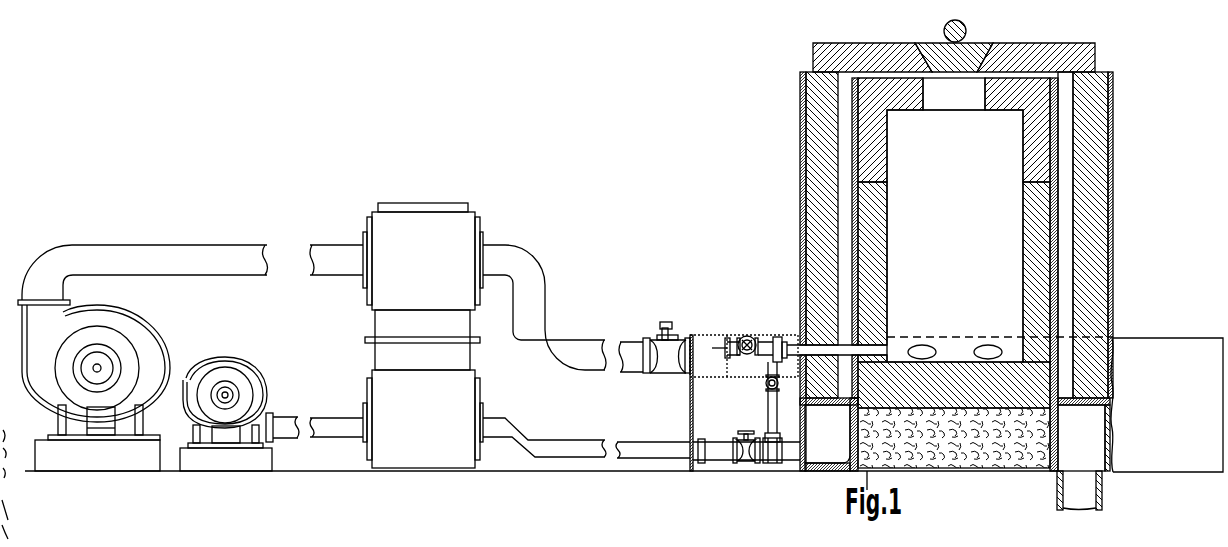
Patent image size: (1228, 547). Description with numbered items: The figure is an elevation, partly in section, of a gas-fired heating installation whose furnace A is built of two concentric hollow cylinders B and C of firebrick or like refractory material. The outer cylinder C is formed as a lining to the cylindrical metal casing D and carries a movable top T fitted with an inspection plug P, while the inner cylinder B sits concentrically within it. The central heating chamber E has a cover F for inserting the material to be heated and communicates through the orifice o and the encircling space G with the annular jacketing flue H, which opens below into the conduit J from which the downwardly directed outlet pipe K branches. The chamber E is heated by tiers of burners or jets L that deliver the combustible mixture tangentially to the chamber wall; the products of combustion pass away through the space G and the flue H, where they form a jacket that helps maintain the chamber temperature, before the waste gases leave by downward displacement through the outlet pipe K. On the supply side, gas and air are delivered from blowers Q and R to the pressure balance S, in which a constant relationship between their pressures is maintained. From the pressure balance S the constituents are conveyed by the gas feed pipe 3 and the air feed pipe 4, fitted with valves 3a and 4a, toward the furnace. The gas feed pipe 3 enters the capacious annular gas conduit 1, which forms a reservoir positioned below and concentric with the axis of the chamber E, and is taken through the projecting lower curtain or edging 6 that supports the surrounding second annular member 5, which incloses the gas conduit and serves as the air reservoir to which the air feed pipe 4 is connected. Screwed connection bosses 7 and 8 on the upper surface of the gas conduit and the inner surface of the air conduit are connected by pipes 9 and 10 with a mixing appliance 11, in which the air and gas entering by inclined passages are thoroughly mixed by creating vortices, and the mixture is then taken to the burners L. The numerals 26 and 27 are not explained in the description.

The blower R is at (130, 457).
The blower Q is at (223, 460).
The pressure balance S is at (450, 223).
The air feed pipe 4 is at (518, 258).
The gas feed pipe 3 is at (518, 428).
The valve 4a is at (672, 328).
The lower curtain or edging 6 is at (694, 409).
The second annular member 5 is at (717, 338).
The connection boss 8 is at (715, 353).
The pipe 10 is at (738, 334).
The mixing appliance 11 is at (775, 335).
The branch pipe 27 is at (767, 336).
The valve 26 is at (768, 385).
The connection boss 7 is at (780, 437).
The annular gas conduit 1 is at (765, 462).
The valve 3a is at (740, 433).
The pipe 9 is at (777, 463).
The furnace A is at (784, 269).
The annular jacketing flue H is at (833, 160).
The heating chamber E is at (955, 236).
The orifice o is at (933, 100).
The cover F is at (1023, 145).
The inner cylinder B is at (1022, 250).
The encircling space G is at (1090, 78).
The outer cylinder C is at (1083, 195).
The cylindrical metal casing D is at (1115, 240).
The conduit J is at (1084, 438).
The outlet pipe K is at (1079, 490).
The movable top T is at (1025, 52).
The inspection plug P is at (932, 43).
The burners or jets L is at (987, 348).